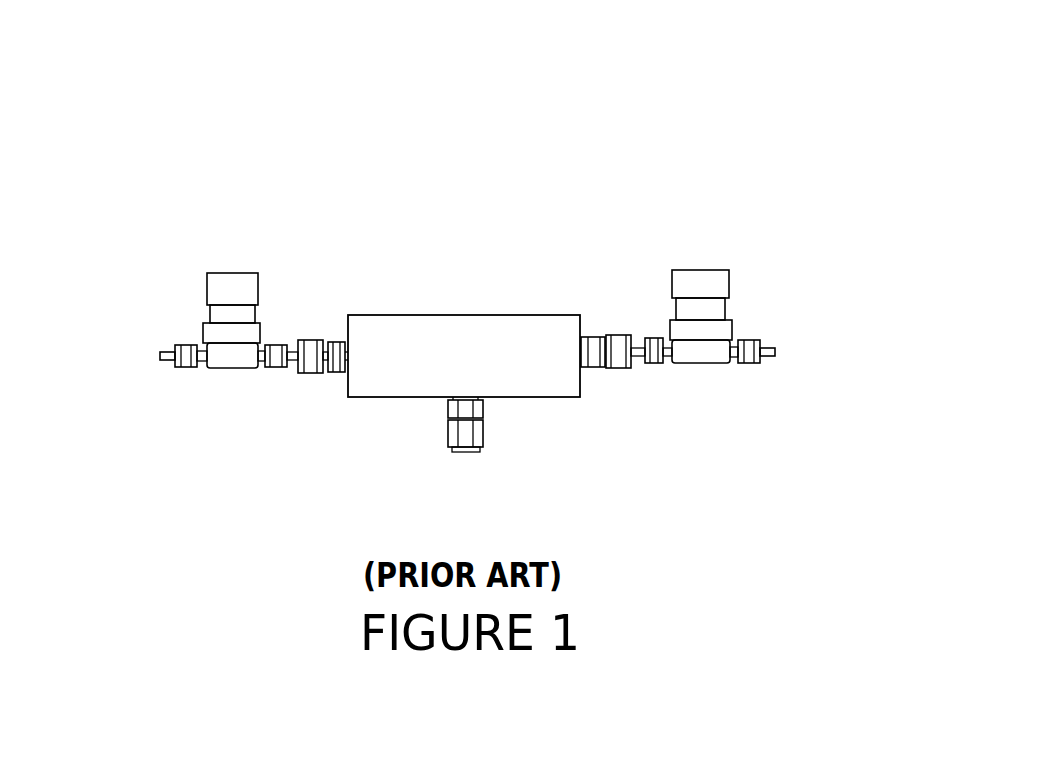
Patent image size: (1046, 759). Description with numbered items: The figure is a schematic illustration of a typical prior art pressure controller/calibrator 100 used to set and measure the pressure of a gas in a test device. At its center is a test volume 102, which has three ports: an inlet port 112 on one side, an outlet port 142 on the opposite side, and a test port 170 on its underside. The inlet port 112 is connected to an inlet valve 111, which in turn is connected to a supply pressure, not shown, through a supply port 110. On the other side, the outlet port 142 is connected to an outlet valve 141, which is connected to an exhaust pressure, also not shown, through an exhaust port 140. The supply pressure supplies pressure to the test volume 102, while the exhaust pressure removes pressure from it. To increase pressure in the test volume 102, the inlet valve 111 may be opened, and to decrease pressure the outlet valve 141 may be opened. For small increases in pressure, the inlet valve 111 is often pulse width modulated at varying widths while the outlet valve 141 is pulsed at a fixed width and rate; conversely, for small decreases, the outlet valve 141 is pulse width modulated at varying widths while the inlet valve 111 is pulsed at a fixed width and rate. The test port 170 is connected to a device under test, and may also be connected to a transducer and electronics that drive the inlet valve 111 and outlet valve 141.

The pressure controller/calibrator 100 is at (615, 85).
The test volume 102 is at (475, 315).
The supply port 110 is at (164, 357).
The inlet valve 111 is at (208, 292).
The inlet port 112 is at (317, 340).
The exhaust port 140 is at (763, 345).
The outlet valve 141 is at (702, 270).
The outlet port 142 is at (613, 368).
The test port 170 is at (448, 433).